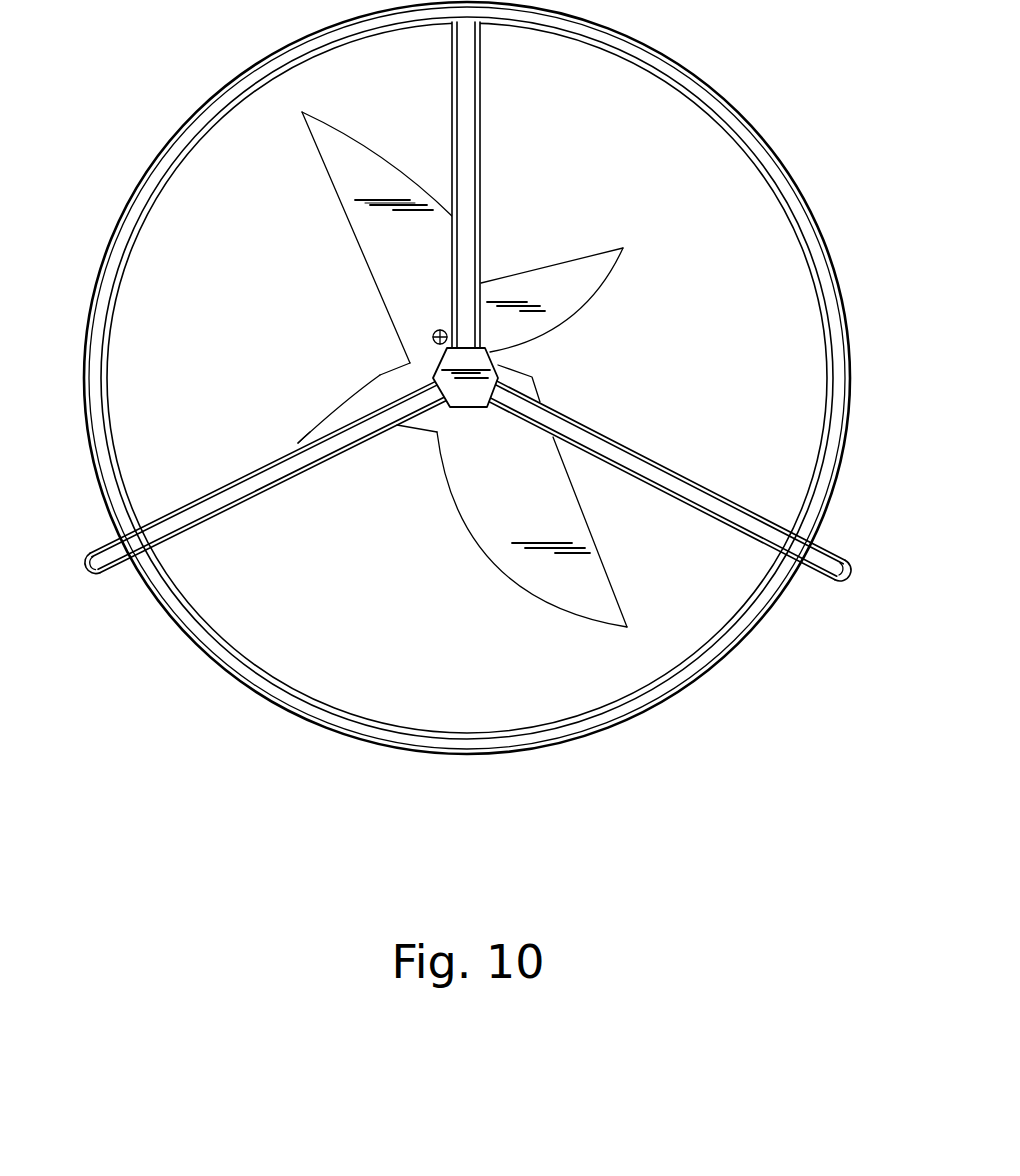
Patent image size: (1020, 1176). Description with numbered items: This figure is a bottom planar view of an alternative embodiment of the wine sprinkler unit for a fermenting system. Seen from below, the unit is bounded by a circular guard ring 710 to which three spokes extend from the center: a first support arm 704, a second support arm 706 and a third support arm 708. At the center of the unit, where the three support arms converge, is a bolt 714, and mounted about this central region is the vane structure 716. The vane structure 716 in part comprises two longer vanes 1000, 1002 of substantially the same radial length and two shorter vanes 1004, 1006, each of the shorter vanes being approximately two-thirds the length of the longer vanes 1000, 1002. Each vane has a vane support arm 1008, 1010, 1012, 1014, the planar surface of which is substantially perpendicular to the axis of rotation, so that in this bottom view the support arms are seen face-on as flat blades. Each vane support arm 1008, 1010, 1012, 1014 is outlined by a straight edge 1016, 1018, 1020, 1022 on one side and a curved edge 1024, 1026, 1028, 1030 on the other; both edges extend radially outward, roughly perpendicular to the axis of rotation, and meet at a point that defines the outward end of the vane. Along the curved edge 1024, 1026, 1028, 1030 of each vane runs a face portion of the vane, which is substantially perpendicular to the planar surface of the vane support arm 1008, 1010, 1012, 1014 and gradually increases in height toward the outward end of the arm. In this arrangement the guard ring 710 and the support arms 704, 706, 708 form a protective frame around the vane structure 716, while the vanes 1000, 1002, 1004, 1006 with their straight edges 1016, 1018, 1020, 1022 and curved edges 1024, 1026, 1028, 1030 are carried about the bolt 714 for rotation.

The first support arm 704 is at (490, 128).
The second support arm 706 is at (218, 534).
The third support arm 708 is at (655, 447).
The guard ring 710 is at (756, 121).
The bolt 714 is at (490, 353).
The vane structure 716 is at (549, 238).
The longer vane 1000 is at (331, 257).
The longer vane 1002 is at (556, 526).
The shorter vane 1004 is at (295, 376).
The shorter vane 1006 is at (609, 287).
The vane support arm 1008 is at (348, 223).
The vane support arm 1010 is at (608, 287).
The vane support arm 1012 is at (526, 526).
The vane support arm 1014 is at (378, 378).
The straight edge 1016 is at (323, 163).
The straight edge 1018 is at (373, 452).
The straight edge 1020 is at (585, 517).
The straight edge 1022 is at (521, 271).
The curved edge 1024 is at (352, 138).
The curved edge 1026 is at (303, 436).
The curved edge 1028 is at (514, 560).
The curved edge 1030 is at (625, 251).